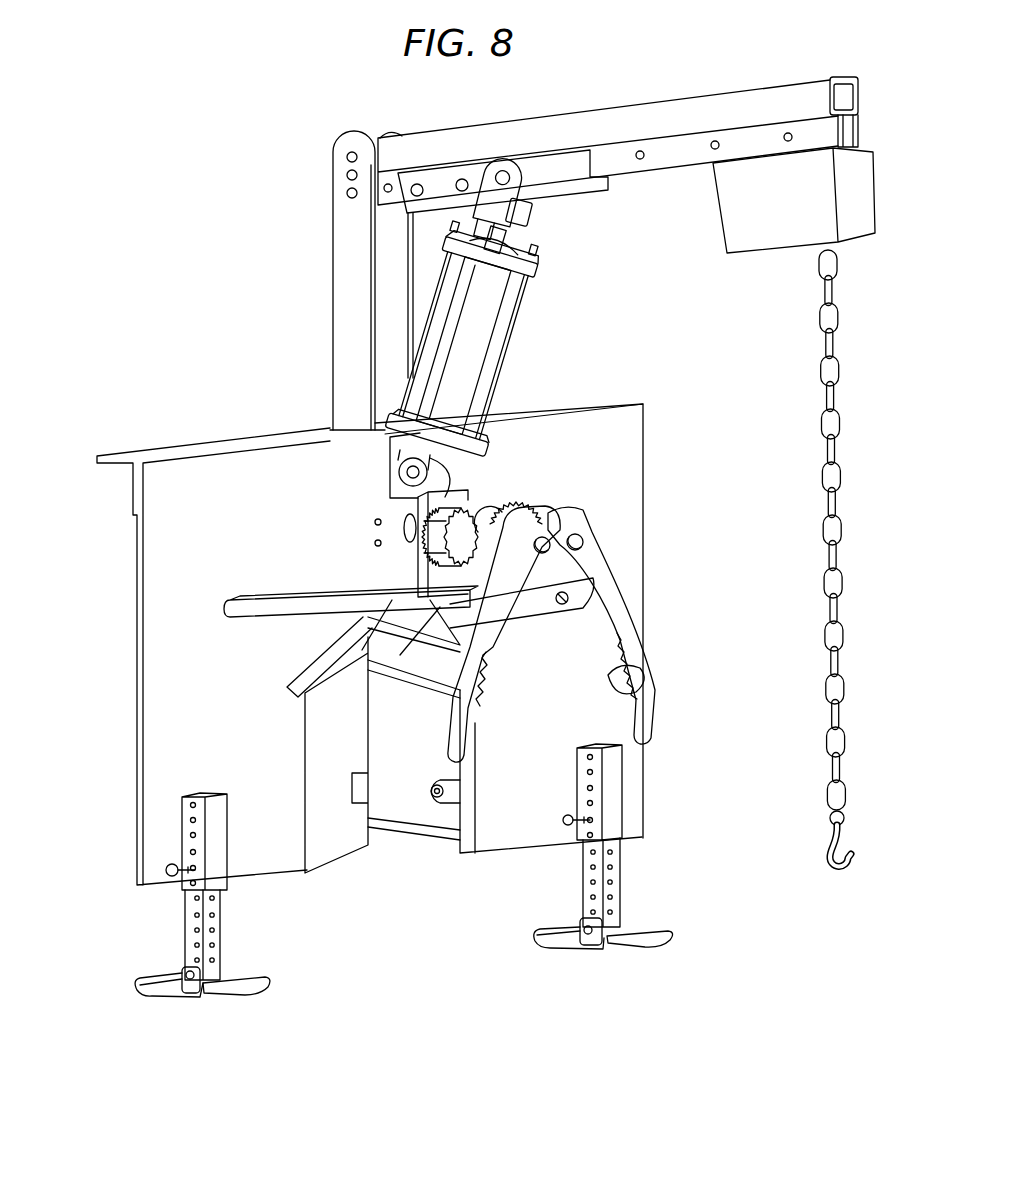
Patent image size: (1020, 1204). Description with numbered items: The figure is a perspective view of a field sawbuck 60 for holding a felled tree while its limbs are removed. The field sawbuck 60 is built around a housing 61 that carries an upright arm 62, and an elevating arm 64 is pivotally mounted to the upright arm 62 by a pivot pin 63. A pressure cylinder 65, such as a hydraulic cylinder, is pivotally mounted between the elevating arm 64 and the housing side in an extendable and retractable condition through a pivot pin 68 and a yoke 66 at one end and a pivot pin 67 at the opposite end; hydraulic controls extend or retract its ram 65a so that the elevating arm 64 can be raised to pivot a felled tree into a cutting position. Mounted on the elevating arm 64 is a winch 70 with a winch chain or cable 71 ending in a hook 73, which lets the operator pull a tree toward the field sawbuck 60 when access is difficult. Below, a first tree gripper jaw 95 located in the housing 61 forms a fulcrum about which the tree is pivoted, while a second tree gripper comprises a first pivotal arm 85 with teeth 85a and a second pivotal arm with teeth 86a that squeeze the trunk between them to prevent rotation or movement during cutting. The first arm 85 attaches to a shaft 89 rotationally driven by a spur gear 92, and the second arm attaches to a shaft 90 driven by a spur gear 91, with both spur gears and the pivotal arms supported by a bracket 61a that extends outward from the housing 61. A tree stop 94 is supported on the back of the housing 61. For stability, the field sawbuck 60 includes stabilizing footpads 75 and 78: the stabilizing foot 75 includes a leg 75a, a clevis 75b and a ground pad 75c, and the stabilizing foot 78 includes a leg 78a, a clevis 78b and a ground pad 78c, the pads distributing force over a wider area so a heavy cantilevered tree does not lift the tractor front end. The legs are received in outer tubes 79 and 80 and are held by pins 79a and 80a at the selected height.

The field sawbuck 60 is at (211, 264).
The housing 61 is at (181, 468).
The bracket 61a is at (266, 606).
The upright arm 62 is at (345, 288).
The pivot pin 63 is at (346, 152).
The elevating arm 64 is at (478, 135).
The pressure cylinder 65 is at (512, 314).
The ram 65a is at (503, 229).
The yoke 66 is at (530, 208).
The pivot pin 67 is at (500, 176).
The pivot pin 68 is at (405, 474).
The winch 70 is at (745, 218).
The winch chain or cable 71 is at (818, 385).
The hook 73 is at (828, 862).
The stabilizing footpad 75 is at (242, 992).
The leg 75a is at (215, 938).
The foot clevis 75b is at (186, 970).
The ground pad 75c is at (155, 995).
The stabilizing footpad 78 is at (610, 948).
The leg 78a is at (615, 878).
The foot pad 78b is at (580, 936).
The ground pad 78c is at (655, 944).
The outer leg tube 79 is at (214, 851).
The locking pin 79a is at (170, 866).
The outer leg tube 80 is at (580, 792).
The locking pin 80a is at (566, 822).
The first pivotal arm 85 is at (608, 582).
The teeth 85a is at (618, 676).
The teeth 86a is at (482, 693).
The shaft 89 is at (584, 543).
The shaft 90 is at (546, 538).
The spur gear 91 is at (440, 518).
The spur gear 92 is at (513, 498).
The tree stop 94 is at (332, 835).
The first tree gripper jaw 95 is at (325, 652).